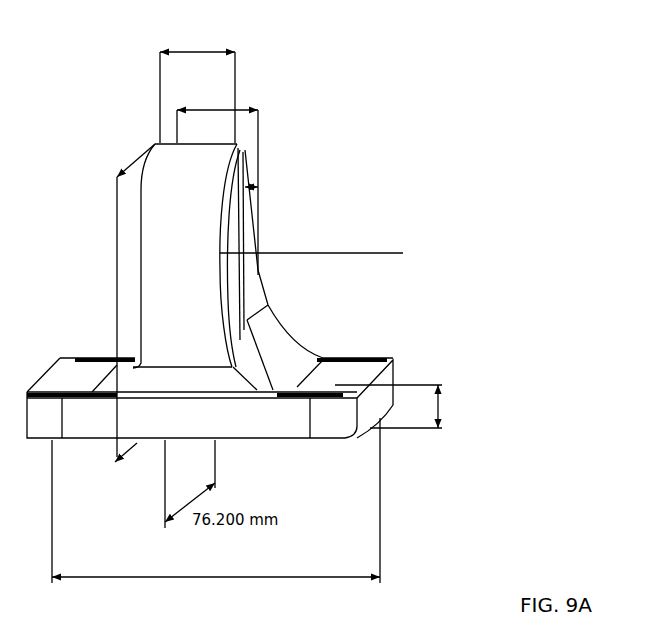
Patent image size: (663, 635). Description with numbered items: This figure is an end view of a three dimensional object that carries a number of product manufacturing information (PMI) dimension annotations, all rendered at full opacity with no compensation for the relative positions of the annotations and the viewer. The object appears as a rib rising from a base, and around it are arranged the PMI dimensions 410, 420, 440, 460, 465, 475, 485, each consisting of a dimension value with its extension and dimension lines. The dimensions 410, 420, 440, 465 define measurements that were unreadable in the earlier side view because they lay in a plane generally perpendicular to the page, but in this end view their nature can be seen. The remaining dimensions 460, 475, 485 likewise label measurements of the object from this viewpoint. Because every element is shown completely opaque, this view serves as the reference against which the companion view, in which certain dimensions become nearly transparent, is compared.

The PMI dimension 410 is at (240, 80).
The PMI dimension 420 is at (262, 143).
The PMI dimension 440 is at (266, 187).
The PMI dimension 460 is at (222, 450).
The PMI dimension 465 is at (386, 527).
The PMI dimension 475 is at (405, 433).
The PMI dimension 485 is at (372, 256).